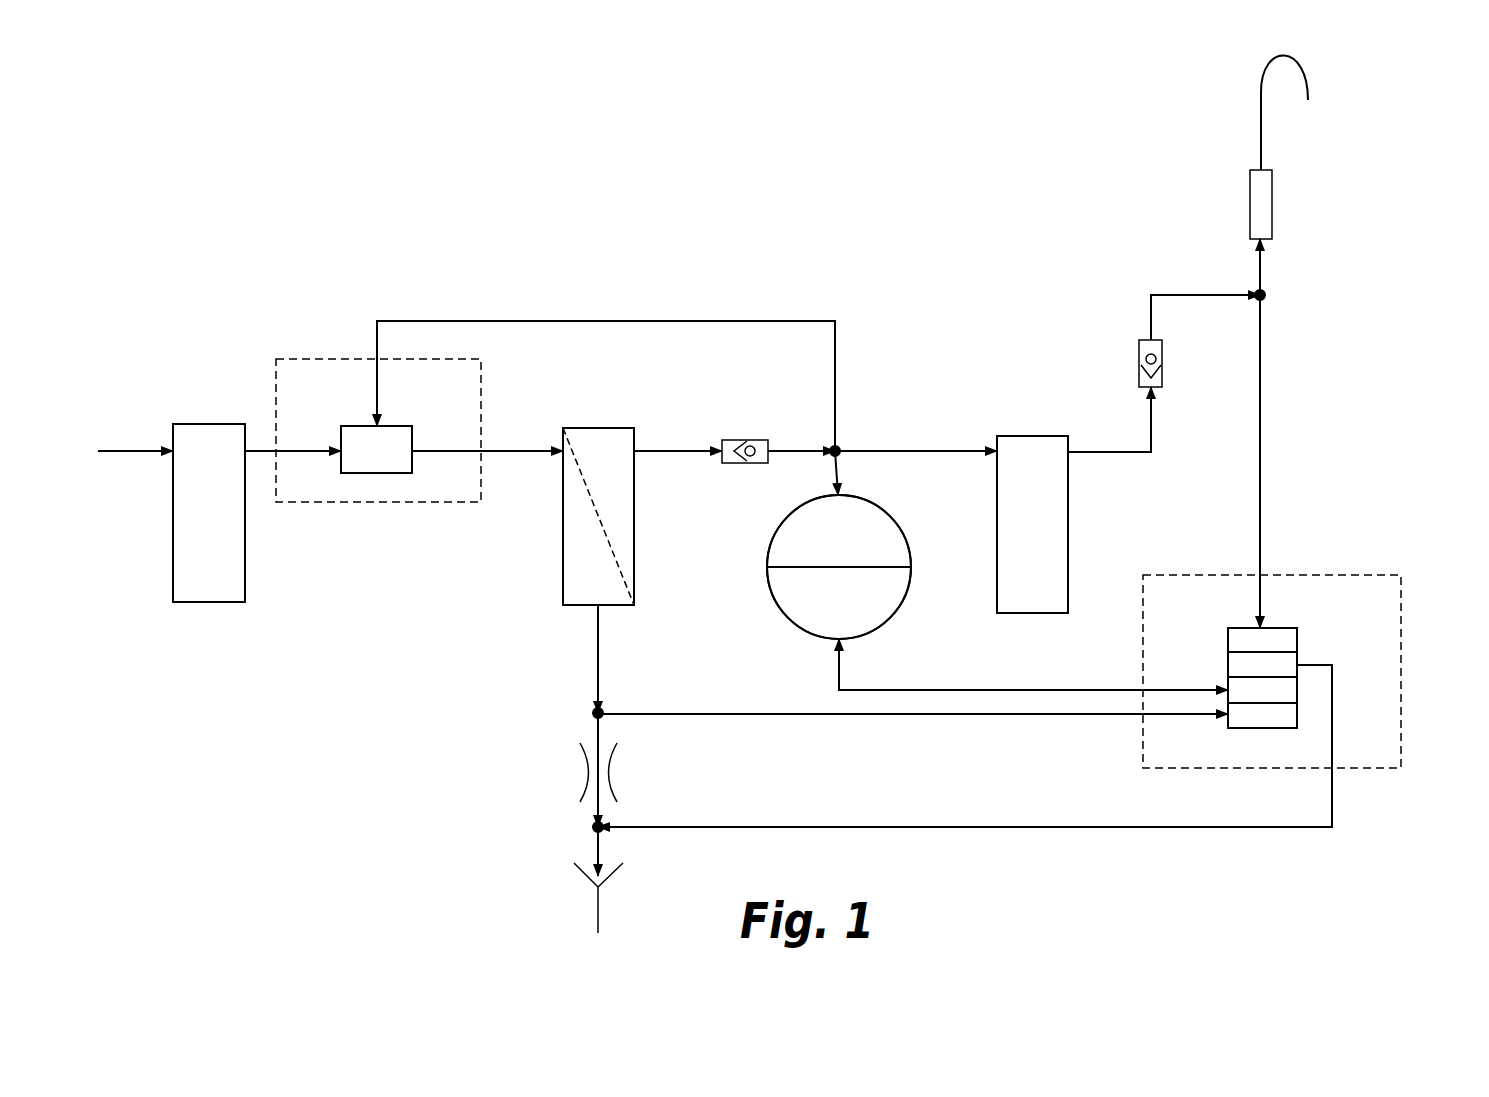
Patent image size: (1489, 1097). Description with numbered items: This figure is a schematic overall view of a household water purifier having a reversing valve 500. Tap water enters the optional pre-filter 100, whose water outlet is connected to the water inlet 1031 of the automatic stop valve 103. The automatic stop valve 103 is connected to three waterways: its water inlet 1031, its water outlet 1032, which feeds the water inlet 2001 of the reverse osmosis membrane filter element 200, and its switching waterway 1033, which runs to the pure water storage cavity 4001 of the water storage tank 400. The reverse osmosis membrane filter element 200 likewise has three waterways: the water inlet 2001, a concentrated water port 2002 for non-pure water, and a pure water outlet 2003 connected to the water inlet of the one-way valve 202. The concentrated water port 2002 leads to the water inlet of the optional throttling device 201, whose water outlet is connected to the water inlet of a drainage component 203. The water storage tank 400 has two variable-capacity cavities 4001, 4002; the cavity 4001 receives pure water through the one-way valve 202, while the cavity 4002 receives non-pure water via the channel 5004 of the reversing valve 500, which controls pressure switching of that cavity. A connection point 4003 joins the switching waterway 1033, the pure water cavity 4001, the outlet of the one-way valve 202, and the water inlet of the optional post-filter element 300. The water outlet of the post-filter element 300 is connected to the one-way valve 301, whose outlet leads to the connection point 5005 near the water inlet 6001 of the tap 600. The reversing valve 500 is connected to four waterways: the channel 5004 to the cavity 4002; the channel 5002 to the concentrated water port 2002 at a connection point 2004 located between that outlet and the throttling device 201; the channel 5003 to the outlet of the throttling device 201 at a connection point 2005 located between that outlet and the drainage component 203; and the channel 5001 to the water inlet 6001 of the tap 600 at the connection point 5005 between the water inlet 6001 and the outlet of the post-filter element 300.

The pre-filter 100 is at (209, 488).
The automatic stop valve 103 is at (378, 454).
The water inlet of the automatic stop valve 1031 is at (293, 430).
The water outlet of the automatic stop valve 1032 is at (487, 435).
The switching waterway of the automatic stop valve 1033 is at (606, 386).
The reverse osmosis membrane filter element 200 is at (598, 494).
The water inlet of the reverse osmosis membrane filter element 2001 is at (537, 476).
The concentrated water port 2002 is at (568, 659).
The pure water outlet 2003 is at (678, 476).
The connection point 2004 is at (630, 695).
The connection point 2005 is at (636, 814).
The throttling device 201 is at (573, 770).
The one-way valve 202 is at (745, 432).
The drainage component 203 is at (570, 880).
The post-filter element 300 is at (1032, 500).
The one-way valve 301 is at (1123, 363).
The water storage tank 400 is at (810, 567).
The pure water storage cavity 4001 is at (839, 531).
The cavity 4002 is at (839, 603).
The connection point 4003 is at (882, 453).
The reversing valve 500 is at (1306, 671).
The channel of the reversing valve 5001 is at (1288, 461).
The channel of the reversing valve 5002 is at (913, 737).
The channel of the reversing valve 5003 is at (992, 741).
The channel of the reversing valve 5004 is at (1033, 664).
The connection point 5005 is at (1240, 289).
The tap 600 is at (1257, 112).
The water inlet of the tap 6001 is at (1272, 205).